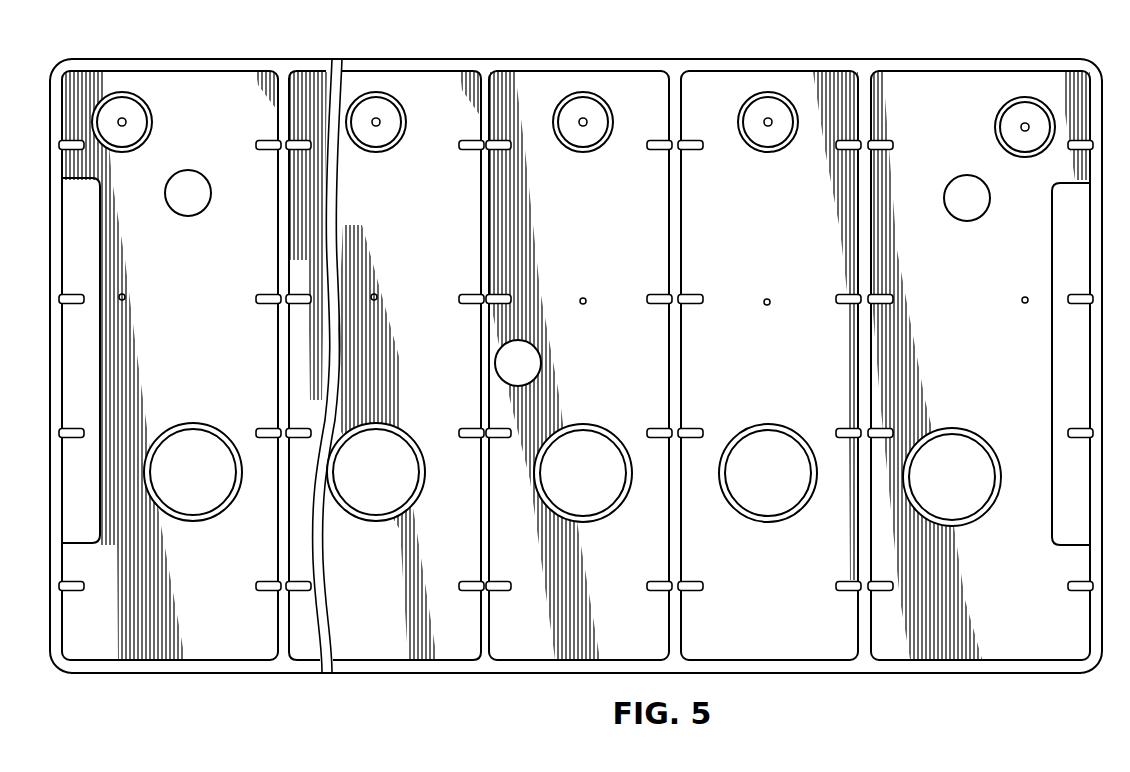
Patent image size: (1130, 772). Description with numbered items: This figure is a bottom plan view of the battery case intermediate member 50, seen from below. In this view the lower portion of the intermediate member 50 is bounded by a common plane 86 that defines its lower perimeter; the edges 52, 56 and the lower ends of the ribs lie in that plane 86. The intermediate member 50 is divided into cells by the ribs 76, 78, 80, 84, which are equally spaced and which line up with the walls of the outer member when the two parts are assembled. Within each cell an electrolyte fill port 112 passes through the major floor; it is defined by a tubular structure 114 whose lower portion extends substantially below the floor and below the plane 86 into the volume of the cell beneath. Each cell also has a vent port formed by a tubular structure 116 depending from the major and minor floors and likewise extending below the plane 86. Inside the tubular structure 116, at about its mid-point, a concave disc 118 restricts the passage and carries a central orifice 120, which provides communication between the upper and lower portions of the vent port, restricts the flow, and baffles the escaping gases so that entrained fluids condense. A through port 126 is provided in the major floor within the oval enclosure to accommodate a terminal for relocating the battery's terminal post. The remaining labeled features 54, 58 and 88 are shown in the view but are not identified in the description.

The intermediate member 50 is at (414, 674).
The edge 52 is at (559, 58).
The right side rail of frame 54 is at (1102, 376).
The edge 56 is at (530, 674).
The left side rail of frame 58 is at (52, 372).
The rib 76 is at (873, 377).
The rib 78 is at (668, 373).
The rib 80 is at (481, 370).
The rib 84 is at (277, 368).
The common plane 86 is at (868, 62).
The attachment tabs 88 is at (72, 144).
The electrolyte fill port 112 is at (188, 438).
The tubular structure 114 is at (157, 441).
The tubular structure 116 is at (145, 108).
The concave disc 118 is at (145, 124).
The orifice 120 is at (125, 128).
The through port 126 is at (208, 192).